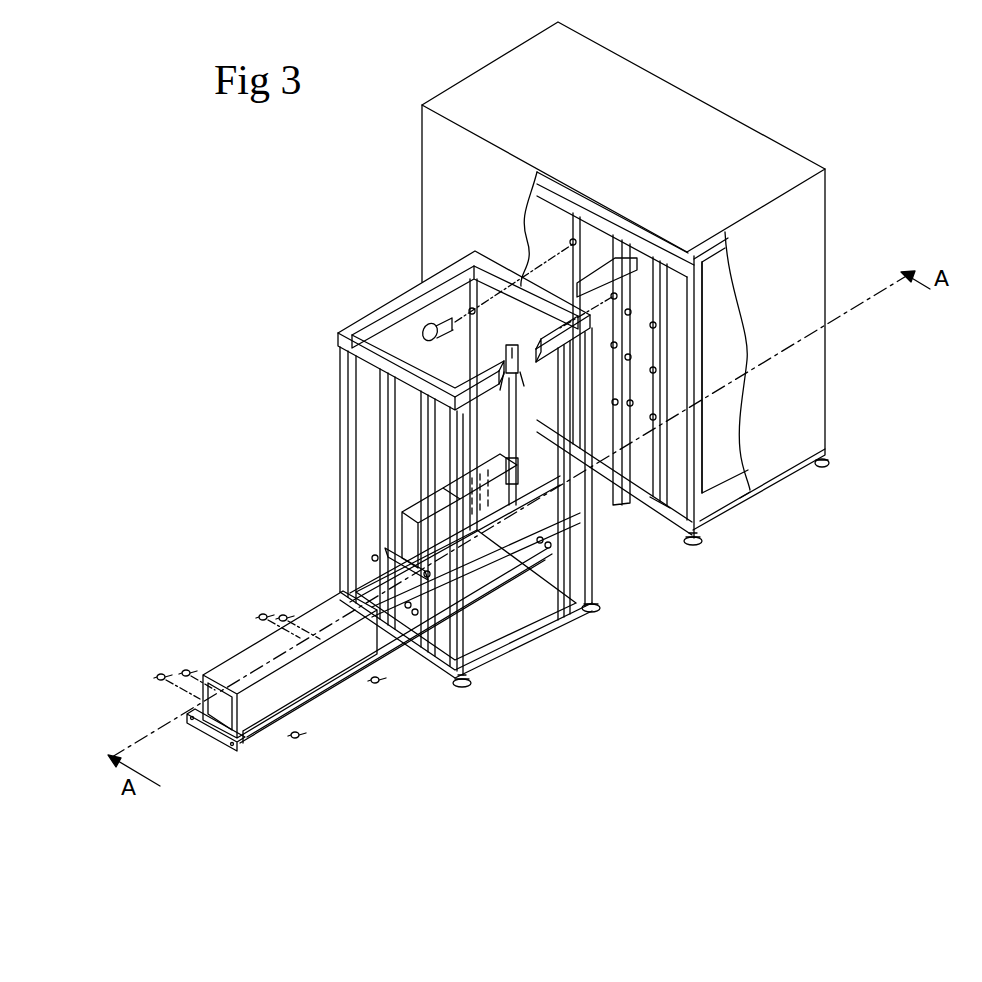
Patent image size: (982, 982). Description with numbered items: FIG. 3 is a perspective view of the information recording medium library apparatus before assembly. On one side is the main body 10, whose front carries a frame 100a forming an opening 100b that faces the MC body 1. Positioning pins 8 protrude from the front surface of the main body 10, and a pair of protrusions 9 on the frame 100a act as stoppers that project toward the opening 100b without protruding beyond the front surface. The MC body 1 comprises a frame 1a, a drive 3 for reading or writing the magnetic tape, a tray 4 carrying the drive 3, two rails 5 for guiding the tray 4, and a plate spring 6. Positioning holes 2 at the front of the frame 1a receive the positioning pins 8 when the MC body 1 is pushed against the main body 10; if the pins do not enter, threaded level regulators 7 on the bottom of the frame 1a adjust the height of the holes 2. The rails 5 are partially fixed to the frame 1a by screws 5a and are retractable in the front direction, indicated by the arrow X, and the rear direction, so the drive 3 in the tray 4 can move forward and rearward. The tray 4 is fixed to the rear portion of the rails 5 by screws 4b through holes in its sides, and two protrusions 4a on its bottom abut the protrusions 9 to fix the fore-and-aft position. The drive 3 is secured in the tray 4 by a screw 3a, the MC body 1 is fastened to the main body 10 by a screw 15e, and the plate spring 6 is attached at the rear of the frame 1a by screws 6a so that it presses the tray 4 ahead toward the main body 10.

The MC body 1 is at (368, 236).
The frame 1a is at (445, 270).
The positioning holes 2 is at (514, 352).
The drive 3 is at (315, 601).
The screw 3a is at (280, 616).
The tray 4 is at (242, 745).
The protrusions 4a is at (372, 668).
The screws 4b is at (254, 617).
The rails 5 is at (480, 552).
The screws 5a is at (416, 616).
The plate spring 6 is at (205, 732).
The screws 6a is at (372, 557).
The level regulators 7 is at (598, 610).
The positioning pins 8 is at (643, 300).
The protrusions 9 is at (640, 478).
The main body 10 is at (716, 520).
The screw 15e is at (427, 327).
The frame 100a is at (700, 308).
The opening 100b is at (655, 318).
The front direction arrow X is at (606, 272).